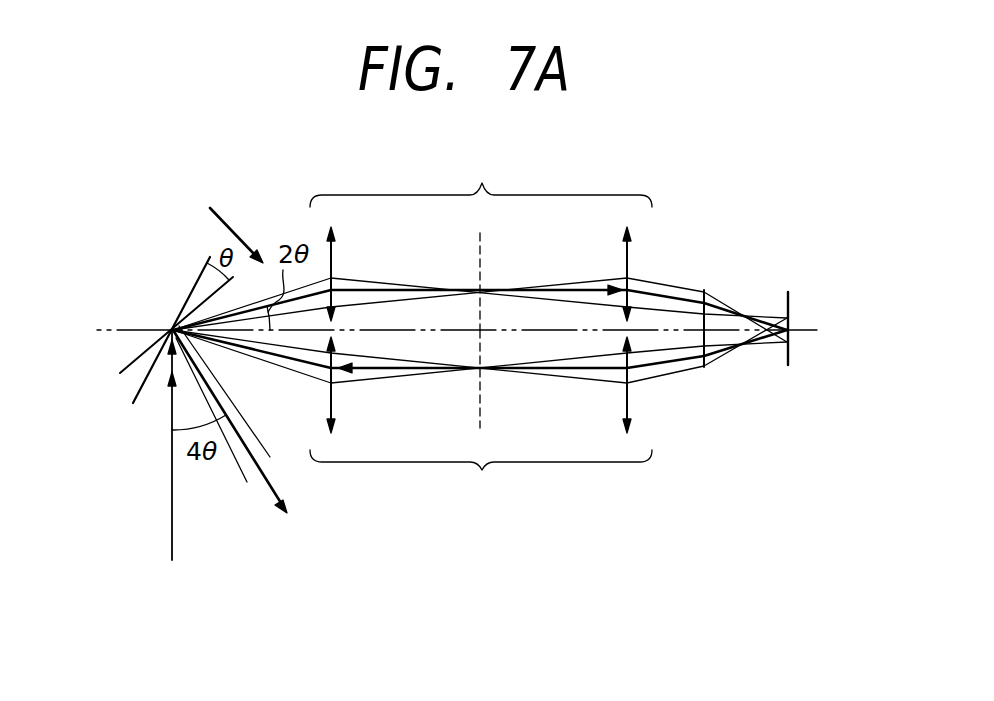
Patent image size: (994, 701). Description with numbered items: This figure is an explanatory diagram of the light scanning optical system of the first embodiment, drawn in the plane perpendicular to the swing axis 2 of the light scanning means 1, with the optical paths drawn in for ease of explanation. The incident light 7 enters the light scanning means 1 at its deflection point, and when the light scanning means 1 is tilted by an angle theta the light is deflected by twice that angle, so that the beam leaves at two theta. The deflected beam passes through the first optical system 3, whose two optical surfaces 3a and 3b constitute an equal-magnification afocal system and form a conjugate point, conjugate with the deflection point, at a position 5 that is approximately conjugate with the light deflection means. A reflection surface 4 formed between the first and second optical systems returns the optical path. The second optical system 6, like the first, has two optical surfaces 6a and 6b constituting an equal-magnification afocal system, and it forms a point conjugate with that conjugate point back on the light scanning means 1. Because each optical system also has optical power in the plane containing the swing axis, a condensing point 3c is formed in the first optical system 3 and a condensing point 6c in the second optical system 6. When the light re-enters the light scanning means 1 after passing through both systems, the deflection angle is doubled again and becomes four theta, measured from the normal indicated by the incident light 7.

The light scanning means 1 is at (181, 246).
The swing axis 2 is at (172, 329).
The first optical system 3 is at (481, 179).
The optical surface 3a is at (334, 249).
The optical surface 3b is at (630, 249).
The condensing point 3c is at (483, 249).
The reflection surface 4 is at (704, 292).
The position approximately conjugate with the light deflection means 5 is at (788, 295).
The second optical system 6 is at (481, 479).
The optical surface 6a is at (630, 405).
The optical surface 6b is at (334, 405).
The condensing point 6c is at (483, 405).
The incident light 7 is at (175, 544).